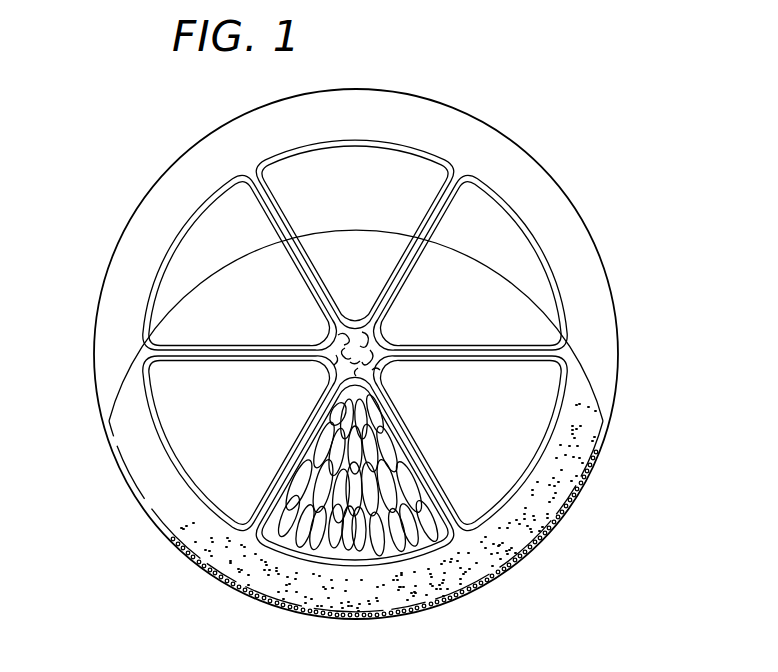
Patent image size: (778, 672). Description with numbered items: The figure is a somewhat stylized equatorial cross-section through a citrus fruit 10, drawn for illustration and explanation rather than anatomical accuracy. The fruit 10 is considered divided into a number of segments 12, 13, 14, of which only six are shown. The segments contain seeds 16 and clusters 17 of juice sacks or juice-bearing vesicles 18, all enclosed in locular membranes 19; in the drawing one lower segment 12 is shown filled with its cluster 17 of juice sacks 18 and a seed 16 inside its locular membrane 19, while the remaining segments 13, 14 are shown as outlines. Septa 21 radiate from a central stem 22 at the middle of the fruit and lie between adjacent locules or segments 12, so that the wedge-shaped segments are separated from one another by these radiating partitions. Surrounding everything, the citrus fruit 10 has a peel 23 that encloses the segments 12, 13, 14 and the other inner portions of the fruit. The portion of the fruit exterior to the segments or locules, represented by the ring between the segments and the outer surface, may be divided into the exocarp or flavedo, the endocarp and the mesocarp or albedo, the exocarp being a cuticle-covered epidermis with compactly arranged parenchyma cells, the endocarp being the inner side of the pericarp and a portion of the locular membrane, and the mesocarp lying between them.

The citrus fruit 10 is at (114, 215).
The segment 12 is at (343, 471).
The segment 13 is at (559, 411).
The segment 14 is at (536, 249).
The seed 16 is at (333, 410).
The cluster 17 is at (399, 461).
The juice sack 18 is at (305, 514).
The locular membrane 19 is at (440, 485).
The septum 21 is at (387, 347).
The central stem 22 is at (330, 330).
The peel 23 is at (110, 330).